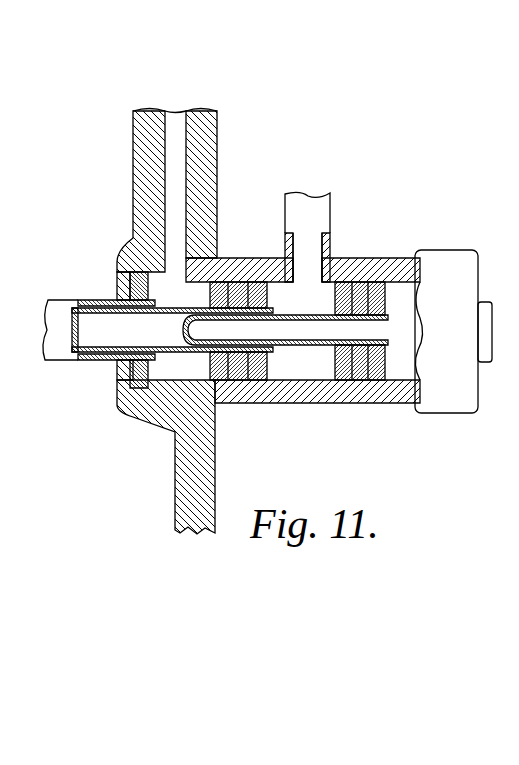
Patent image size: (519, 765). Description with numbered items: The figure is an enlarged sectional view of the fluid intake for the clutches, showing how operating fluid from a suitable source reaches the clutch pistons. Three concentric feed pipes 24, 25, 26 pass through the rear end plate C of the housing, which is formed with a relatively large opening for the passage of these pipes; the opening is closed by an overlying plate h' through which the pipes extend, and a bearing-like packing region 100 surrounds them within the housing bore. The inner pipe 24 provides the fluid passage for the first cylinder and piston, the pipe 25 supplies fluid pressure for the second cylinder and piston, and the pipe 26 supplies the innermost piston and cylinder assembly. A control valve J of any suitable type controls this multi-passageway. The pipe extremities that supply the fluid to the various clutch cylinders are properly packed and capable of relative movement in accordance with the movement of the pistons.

The end plate C is at (218, 213).
The control valve J is at (365, 262).
The housing bottom plate 100 is at (340, 403).
The lower body h' is at (155, 403).
The feed pipe 26 is at (63, 303).
The feed pipe 25 is at (98, 338).
The inner pipe 24 is at (318, 332).